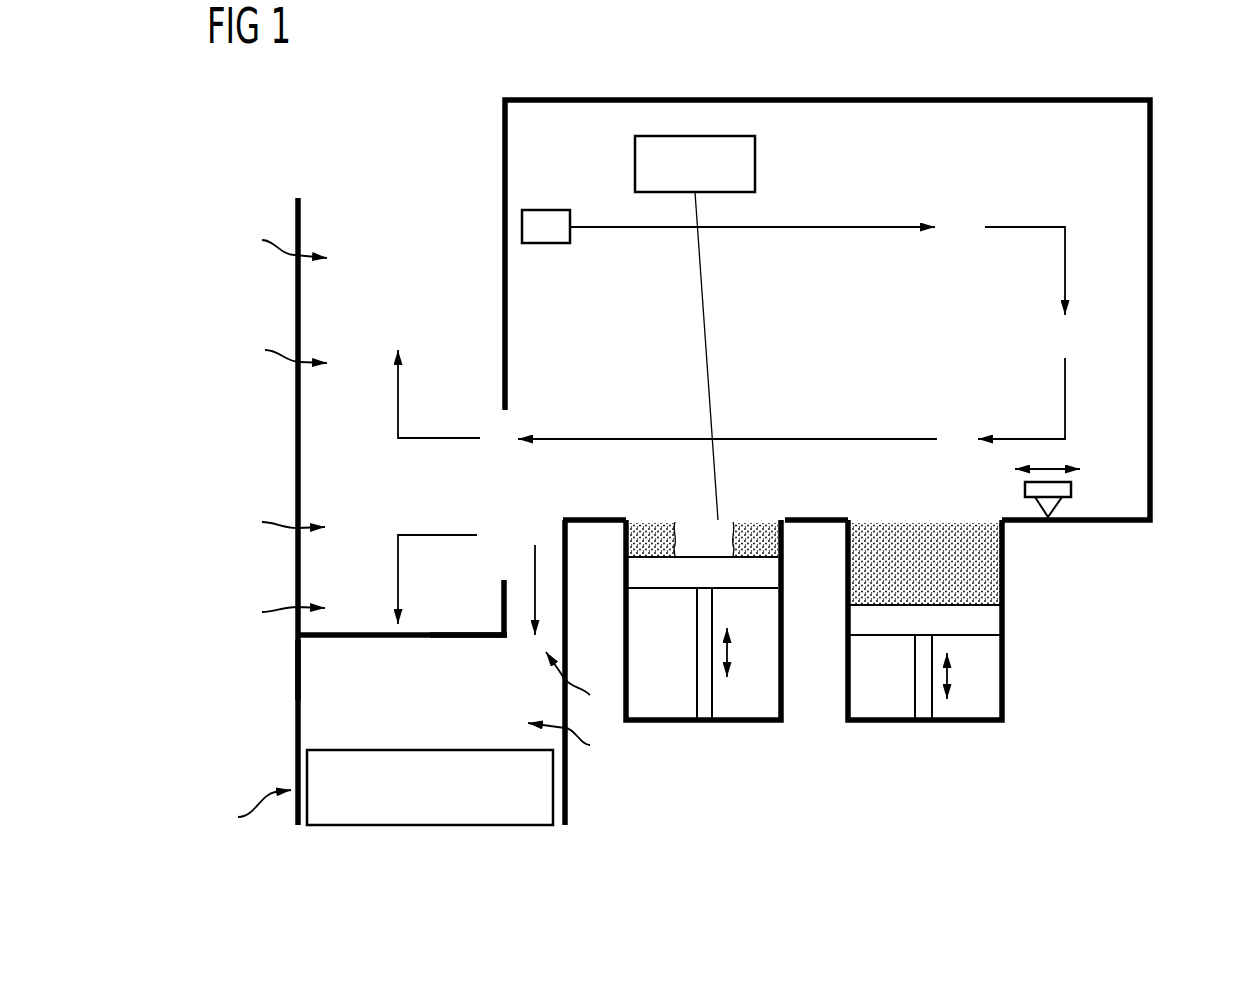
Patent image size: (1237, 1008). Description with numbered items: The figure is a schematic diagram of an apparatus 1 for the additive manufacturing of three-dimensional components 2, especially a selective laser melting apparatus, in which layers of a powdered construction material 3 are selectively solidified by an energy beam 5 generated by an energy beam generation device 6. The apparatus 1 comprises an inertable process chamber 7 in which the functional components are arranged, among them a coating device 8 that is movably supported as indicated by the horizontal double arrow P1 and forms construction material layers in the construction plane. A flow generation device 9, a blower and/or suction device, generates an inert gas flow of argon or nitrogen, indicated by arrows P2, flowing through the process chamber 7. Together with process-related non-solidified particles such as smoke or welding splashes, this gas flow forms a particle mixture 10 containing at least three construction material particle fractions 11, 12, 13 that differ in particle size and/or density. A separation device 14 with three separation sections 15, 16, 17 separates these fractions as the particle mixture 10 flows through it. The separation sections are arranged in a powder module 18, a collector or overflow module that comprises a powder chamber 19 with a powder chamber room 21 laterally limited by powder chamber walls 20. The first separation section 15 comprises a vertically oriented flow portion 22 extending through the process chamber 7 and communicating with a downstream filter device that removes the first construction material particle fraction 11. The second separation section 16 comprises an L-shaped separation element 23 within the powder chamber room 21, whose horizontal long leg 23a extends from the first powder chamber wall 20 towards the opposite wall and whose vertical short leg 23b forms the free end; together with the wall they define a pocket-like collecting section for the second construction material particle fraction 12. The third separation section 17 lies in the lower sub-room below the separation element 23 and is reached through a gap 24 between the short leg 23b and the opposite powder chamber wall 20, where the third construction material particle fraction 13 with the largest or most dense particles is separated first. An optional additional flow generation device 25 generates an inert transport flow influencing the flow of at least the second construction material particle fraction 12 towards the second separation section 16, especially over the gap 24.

The apparatus 1 is at (1138, 69).
The component 2 is at (722, 538).
The construction material 3 is at (638, 540).
The energy beam 5 is at (705, 332).
The irradiation device / beam source 6 is at (688, 136).
The process chamber 7 is at (1121, 254).
The coating device 8 is at (1081, 505).
The flow generation device 9 is at (540, 210).
The particle mixture 10 is at (637, 429).
The first construction material particle fraction 11 is at (442, 397).
The second construction material particle fraction 12 is at (398, 575).
The third construction material particle fraction 13 is at (435, 830).
The separation device 14 is at (280, 526).
The first separation section 15 is at (283, 346).
The second separation section 16 is at (280, 611).
The third separation section 17 is at (577, 689).
The powder module 18 is at (249, 814).
The powder chamber 19 is at (571, 744).
The powder chamber walls 20 is at (298, 710).
The powder chamber room 21 is at (312, 667).
The flow portion 22 is at (282, 240).
The separation element 23 is at (400, 652).
The long leg 23a is at (462, 639).
The short leg 23b is at (500, 608).
The gap 24 is at (562, 597).
The additional flow generation device 25 is at (532, 530).
The double arrow P1 is at (1054, 467).
The arrows P2 is at (830, 227).